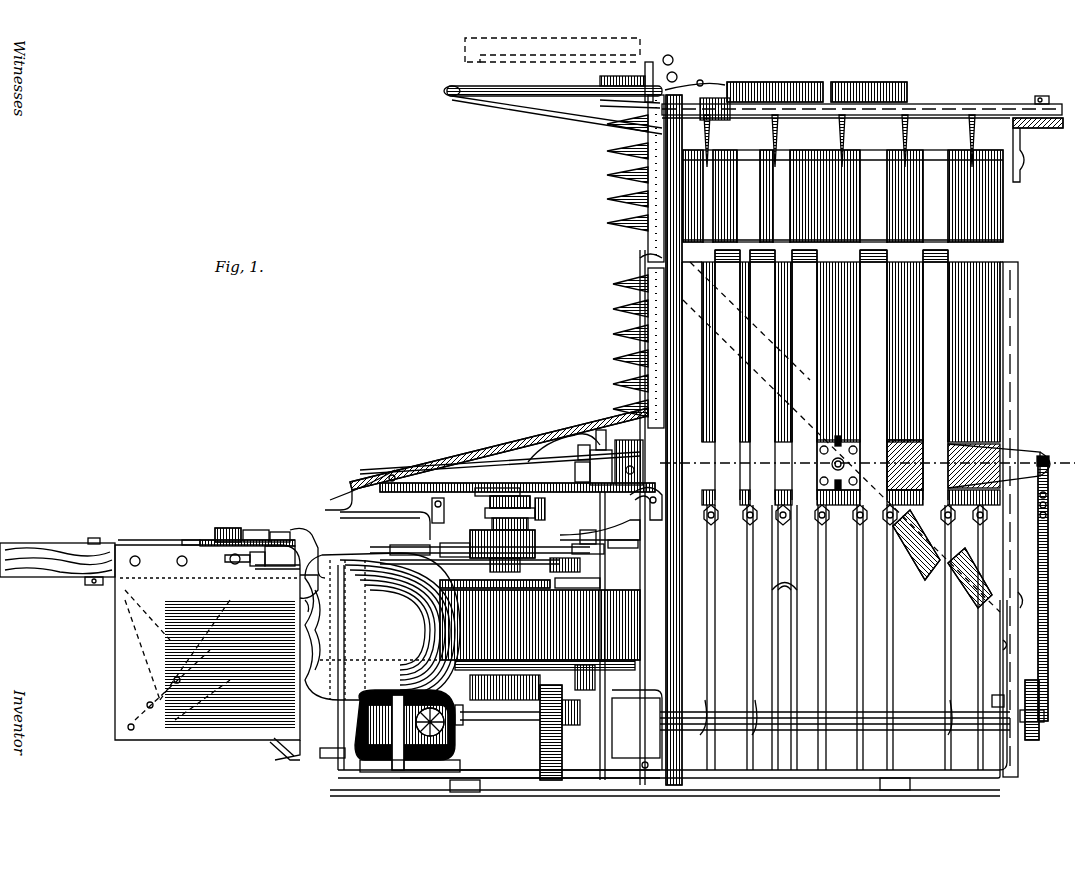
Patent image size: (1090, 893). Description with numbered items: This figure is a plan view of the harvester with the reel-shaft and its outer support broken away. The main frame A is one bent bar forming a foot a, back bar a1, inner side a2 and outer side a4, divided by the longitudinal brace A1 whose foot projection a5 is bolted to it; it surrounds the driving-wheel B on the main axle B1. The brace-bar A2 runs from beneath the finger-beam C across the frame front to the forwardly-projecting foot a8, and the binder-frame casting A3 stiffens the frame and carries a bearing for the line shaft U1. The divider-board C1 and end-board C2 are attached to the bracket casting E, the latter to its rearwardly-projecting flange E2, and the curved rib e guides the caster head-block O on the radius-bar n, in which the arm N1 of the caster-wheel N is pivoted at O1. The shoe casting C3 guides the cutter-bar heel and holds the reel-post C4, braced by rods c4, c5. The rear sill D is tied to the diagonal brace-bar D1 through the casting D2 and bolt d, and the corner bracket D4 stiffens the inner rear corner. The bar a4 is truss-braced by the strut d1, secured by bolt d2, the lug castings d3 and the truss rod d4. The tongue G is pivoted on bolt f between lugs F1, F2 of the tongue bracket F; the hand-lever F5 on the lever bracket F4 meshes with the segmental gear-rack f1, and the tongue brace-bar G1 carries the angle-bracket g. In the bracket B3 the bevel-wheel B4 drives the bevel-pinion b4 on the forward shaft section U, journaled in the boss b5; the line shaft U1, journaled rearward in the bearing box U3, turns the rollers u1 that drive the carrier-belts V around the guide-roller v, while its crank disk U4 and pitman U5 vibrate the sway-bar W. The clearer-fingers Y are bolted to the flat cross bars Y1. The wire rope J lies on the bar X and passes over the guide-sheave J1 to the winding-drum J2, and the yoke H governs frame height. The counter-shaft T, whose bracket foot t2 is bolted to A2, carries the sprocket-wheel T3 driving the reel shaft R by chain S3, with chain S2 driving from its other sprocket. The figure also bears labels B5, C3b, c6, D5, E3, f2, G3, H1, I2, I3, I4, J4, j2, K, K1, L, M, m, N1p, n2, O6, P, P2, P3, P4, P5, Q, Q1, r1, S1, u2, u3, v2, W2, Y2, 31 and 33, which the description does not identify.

The main frame A is at (499, 671).
The longitudinal brace bar A1 is at (637, 720).
The brace-bar A2 is at (502, 445).
The binder-frame casting A3 is at (636, 728).
The foot a is at (640, 759).
The back bar a1 is at (487, 648).
The inner side bar a2 is at (623, 533).
The outer side bar a4 is at (950, 778).
The side foot projection a5 is at (647, 703).
The forwardly-projecting foot a8 is at (325, 743).
The driving-wheel B is at (540, 625).
The main axle B1 is at (499, 606).
The bracket B3 is at (395, 774).
The bevel-wheel B4 is at (413, 730).
The bevel gear B5 is at (400, 698).
The bevel-pinion b4 is at (460, 733).
The boss b5 is at (456, 707).
The finger-beam C is at (684, 772).
The divider-board C1 is at (530, 86).
The end-board C2 is at (945, 108).
The shoe casting C3 is at (598, 112).
The curved guide C3b is at (564, 442).
The reel-post C4 is at (591, 634).
The brace-rod c4 is at (500, 459).
The brace-rod c5 is at (598, 512).
The wheel hub c6 is at (367, 645).
The rear sill D is at (1018, 383).
The diagonal brace-bar D1 is at (916, 545).
The casting D2 is at (982, 594).
The corner bracket D4 is at (1022, 165).
The end block D5 is at (1063, 124).
The bolt d is at (1024, 595).
The strut d1 is at (820, 725).
The bolt d2 is at (656, 745).
The lug castings d3 is at (682, 794).
The truss rod d4 is at (590, 790).
The bracket casting E is at (627, 77).
The rearwardly-projecting flange E2 is at (725, 120).
The lever arm E3 is at (630, 101).
The curved rib e is at (703, 76).
The tongue bracket F is at (308, 541).
The lug F1 is at (252, 527).
The lug F2 is at (298, 586).
The lever bracket F4 is at (106, 546).
The hand-lever F5 is at (232, 528).
The pivot bolt f is at (303, 601).
The segmental gear-rack f1 is at (278, 525).
The clamp f2 is at (256, 525).
The tongue G is at (116, 545).
The tongue brace-bar G1 is at (278, 752).
The plate hatch G3 is at (210, 660).
The angle-bracket g is at (146, 740).
The yoke H is at (480, 539).
The lower shaft H1 is at (500, 697).
The bearing I2 is at (277, 565).
The bearing I3 is at (246, 567).
The bearing bolt I4 is at (228, 559).
The wire rope J is at (650, 240).
The guide-sheave J1 is at (646, 496).
The winding-drum J2 is at (540, 507).
The blade bar arm J4 is at (604, 532).
The pin j2 is at (552, 524).
The gear wheel K is at (487, 534).
The gear block K1 is at (599, 459).
The lever L is at (491, 482).
The lever bar M is at (385, 515).
The pivot m is at (446, 509).
The caster-wheel N is at (880, 82).
The caster-wheel arm N1 is at (782, 78).
The dotted outline of bar N1p is at (595, 45).
The radius-bar n is at (990, 110).
The rail bolt n2 is at (1050, 103).
The caster head-block O is at (718, 84).
The arm pivot O1 is at (689, 66).
The pivot O6 is at (672, 58).
The cam wheel P is at (382, 626).
The shaft P2 is at (470, 552).
The sleeve P3 is at (567, 664).
The shaft P4 is at (545, 630).
The bearing P5 is at (565, 570).
The bearing Q is at (578, 613).
The bearing Q1 is at (576, 612).
The reel shaft R is at (601, 452).
The slide r1 is at (623, 463).
The sprocket chain S1 is at (508, 599).
The driving-chain S2 is at (511, 580).
The driving-chain S3 is at (437, 484).
The counter-shaft T is at (380, 504).
The sprocket-wheel T3 is at (362, 479).
The extension foot t2 is at (392, 474).
The forward shaft section U is at (552, 732).
The line shaft U1 is at (845, 722).
The rear bearing box U3 is at (810, 694).
The crank disk U4 is at (1040, 738).
The pitman U5 is at (1048, 658).
The rollers u1 is at (830, 728).
The rod u2 is at (1048, 504).
The pin u3 is at (1071, 448).
The carrier-belts V is at (842, 327).
The guide-roller v is at (852, 160).
The spike v2 is at (777, 138).
The sway-bar W is at (886, 472).
The bearing block W2 is at (822, 462).
The bar X is at (648, 257).
The clearer-fingers Y is at (930, 637).
The flat cross bars Y1 is at (950, 522).
The forked rod Y2 is at (826, 518).
The pin 31 is at (799, 466).
The pin 33 is at (841, 454).